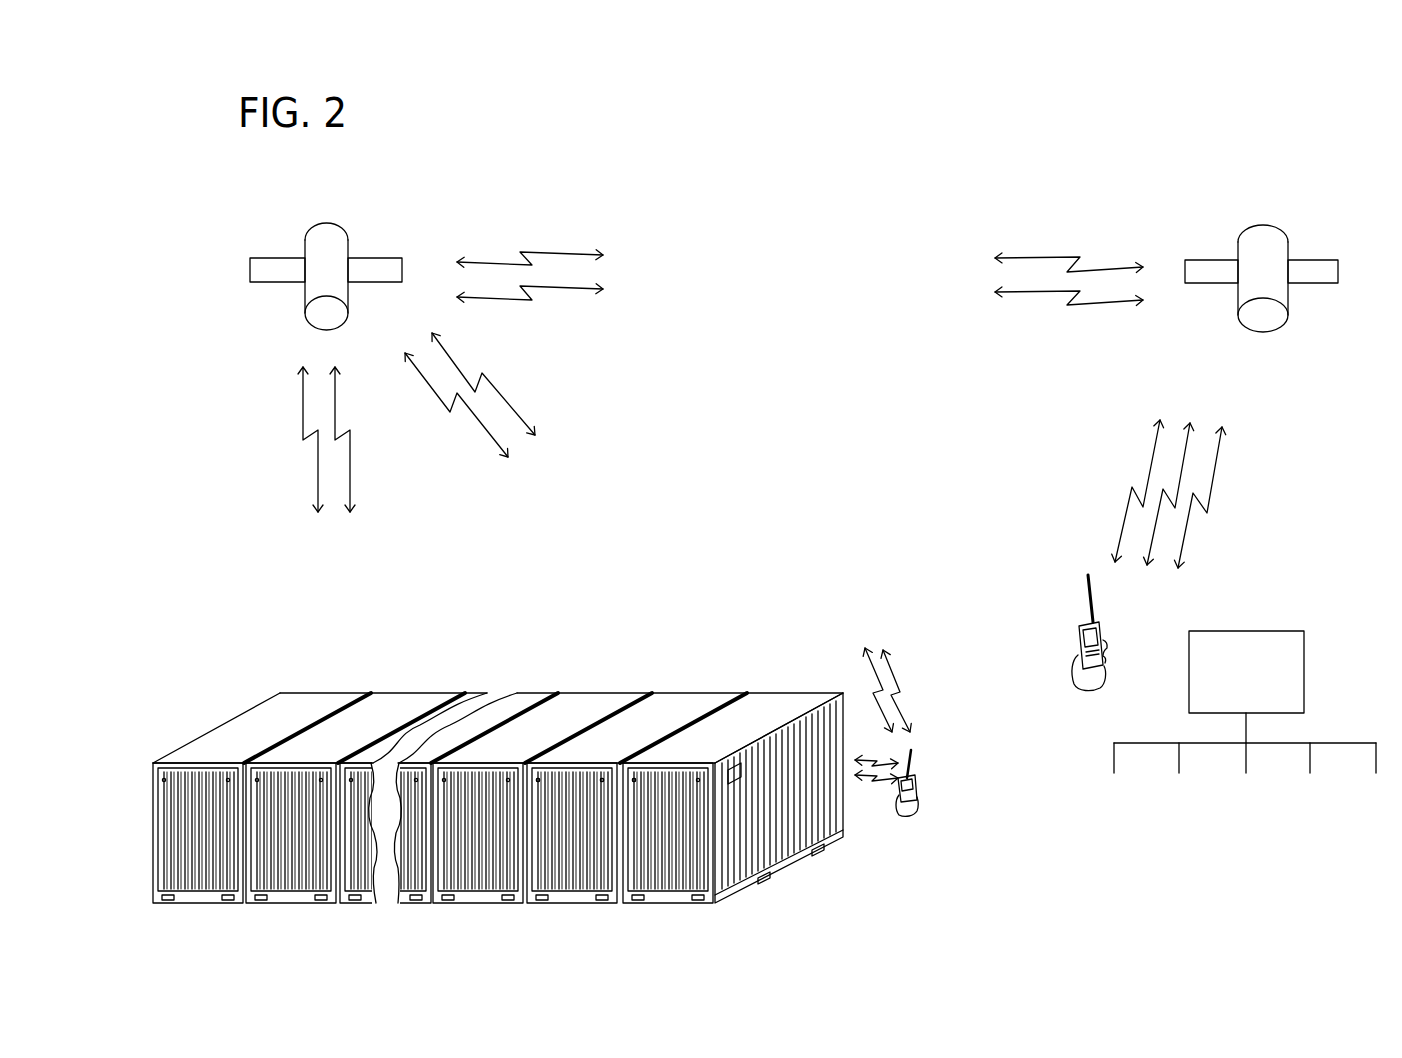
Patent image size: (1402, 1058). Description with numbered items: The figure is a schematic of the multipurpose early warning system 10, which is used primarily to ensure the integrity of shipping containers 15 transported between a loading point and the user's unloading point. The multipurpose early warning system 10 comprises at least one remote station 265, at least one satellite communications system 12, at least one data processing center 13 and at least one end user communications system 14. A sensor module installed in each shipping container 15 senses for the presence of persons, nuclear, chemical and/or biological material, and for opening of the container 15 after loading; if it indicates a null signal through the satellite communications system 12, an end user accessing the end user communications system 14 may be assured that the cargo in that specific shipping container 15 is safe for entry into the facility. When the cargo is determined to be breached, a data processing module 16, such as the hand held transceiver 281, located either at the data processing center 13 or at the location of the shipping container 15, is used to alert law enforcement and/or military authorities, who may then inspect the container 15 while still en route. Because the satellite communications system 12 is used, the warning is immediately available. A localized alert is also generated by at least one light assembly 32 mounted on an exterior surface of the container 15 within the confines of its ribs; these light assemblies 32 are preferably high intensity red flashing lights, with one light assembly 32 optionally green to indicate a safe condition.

The multipurpose early warning system 10 is at (1361, 87).
The satellite communications system 12 is at (371, 420).
The remote station 265 is at (1250, 466).
The shipping container 15 is at (283, 778).
The light assembly 32 is at (634, 780).
The hand held transceiver 281 is at (1079, 631).
The data processing module 16 is at (993, 705).
The data processing center 13 is at (1288, 650).
The end user communications system 14 is at (1174, 802).